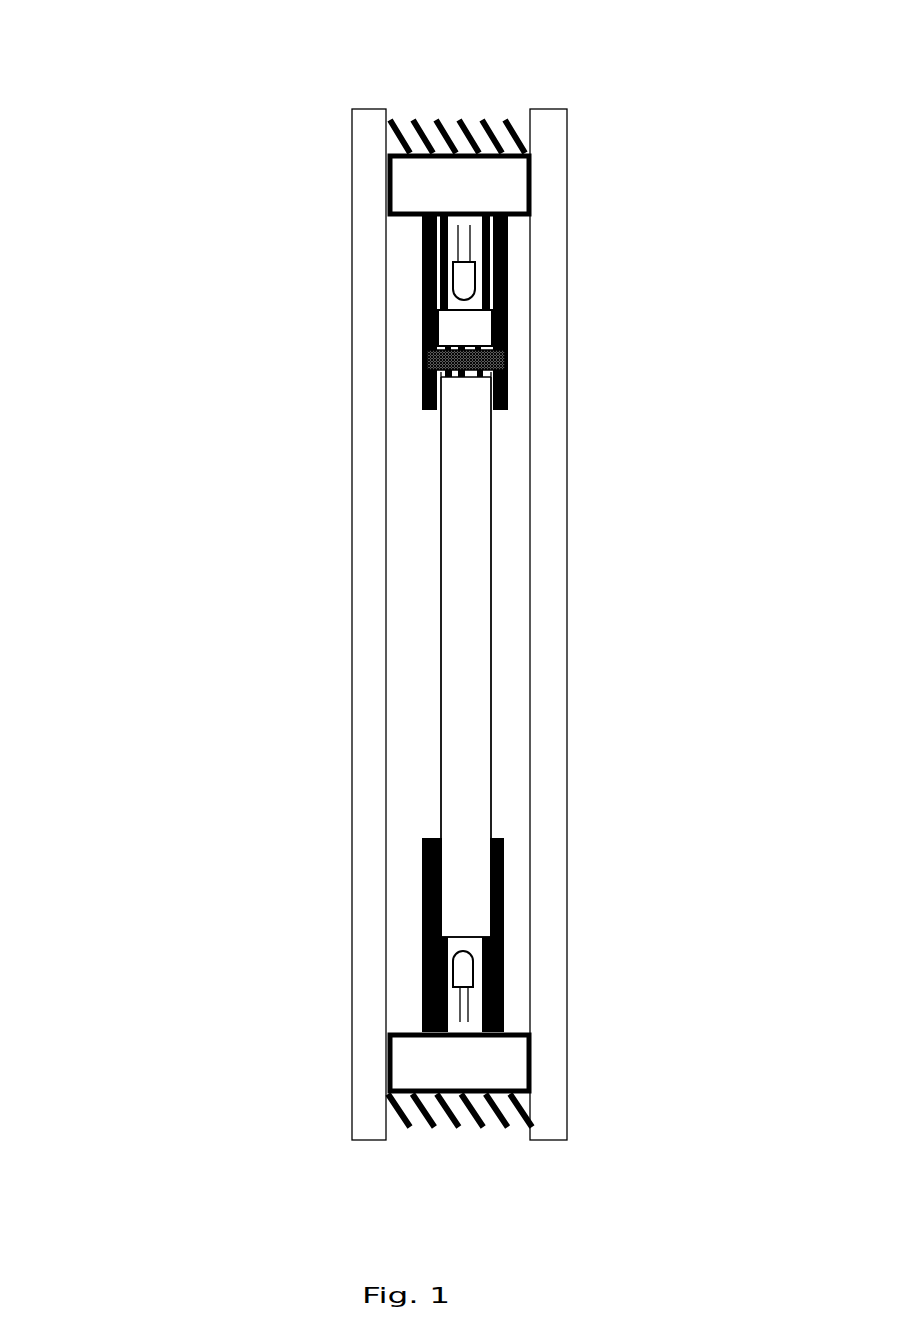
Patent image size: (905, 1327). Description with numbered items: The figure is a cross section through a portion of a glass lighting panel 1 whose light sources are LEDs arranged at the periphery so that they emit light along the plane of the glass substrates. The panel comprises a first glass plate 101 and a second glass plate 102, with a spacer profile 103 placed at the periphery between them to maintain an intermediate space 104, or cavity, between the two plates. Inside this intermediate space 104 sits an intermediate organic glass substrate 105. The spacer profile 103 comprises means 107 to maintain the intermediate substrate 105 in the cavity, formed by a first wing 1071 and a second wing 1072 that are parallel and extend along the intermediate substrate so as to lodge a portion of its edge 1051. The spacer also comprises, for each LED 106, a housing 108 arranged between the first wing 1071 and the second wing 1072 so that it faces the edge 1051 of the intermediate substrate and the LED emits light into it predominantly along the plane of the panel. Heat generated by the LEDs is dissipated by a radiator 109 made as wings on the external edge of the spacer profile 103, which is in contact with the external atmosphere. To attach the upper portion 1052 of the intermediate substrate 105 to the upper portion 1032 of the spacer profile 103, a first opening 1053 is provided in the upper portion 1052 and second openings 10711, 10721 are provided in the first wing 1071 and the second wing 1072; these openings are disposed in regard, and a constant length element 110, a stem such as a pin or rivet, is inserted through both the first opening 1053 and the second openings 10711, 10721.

The glass lighting panel 1 is at (587, 107).
The first glass plate 101 is at (567, 542).
The second glass plate 102 is at (352, 568).
The spacer profile 103 is at (388, 172).
The upper portion of the spacer profile 1032 is at (422, 233).
The intermediate space 104 is at (400, 422).
The intermediate organic glass substrate 105 is at (458, 483).
The edge of the intermediate organic glass substrate 1051 is at (458, 917).
The upper portion of the intermediate substrate 1052 is at (460, 398).
The first opening 1053 is at (450, 375).
The LED 106 is at (422, 258).
The means to maintain the intermediate organic glass substrate 107 is at (422, 387).
The first wing 1071 is at (492, 332).
The second opening in the first wing 10711 is at (505, 362).
The second wing 1072 is at (422, 318).
The second opening in the second wing 10721 is at (427, 360).
The housing 108 is at (470, 251).
The radiator 109 is at (460, 121).
The constant length element 110 is at (468, 375).